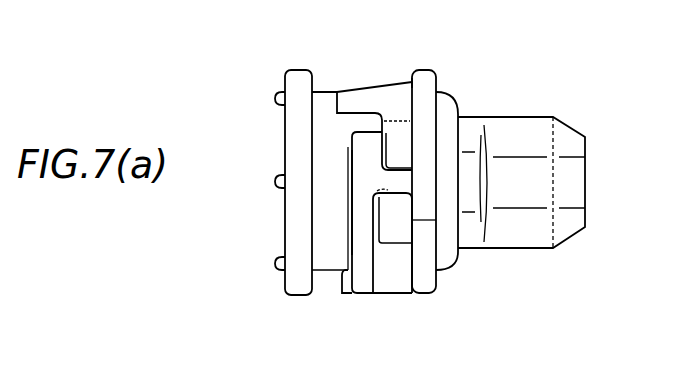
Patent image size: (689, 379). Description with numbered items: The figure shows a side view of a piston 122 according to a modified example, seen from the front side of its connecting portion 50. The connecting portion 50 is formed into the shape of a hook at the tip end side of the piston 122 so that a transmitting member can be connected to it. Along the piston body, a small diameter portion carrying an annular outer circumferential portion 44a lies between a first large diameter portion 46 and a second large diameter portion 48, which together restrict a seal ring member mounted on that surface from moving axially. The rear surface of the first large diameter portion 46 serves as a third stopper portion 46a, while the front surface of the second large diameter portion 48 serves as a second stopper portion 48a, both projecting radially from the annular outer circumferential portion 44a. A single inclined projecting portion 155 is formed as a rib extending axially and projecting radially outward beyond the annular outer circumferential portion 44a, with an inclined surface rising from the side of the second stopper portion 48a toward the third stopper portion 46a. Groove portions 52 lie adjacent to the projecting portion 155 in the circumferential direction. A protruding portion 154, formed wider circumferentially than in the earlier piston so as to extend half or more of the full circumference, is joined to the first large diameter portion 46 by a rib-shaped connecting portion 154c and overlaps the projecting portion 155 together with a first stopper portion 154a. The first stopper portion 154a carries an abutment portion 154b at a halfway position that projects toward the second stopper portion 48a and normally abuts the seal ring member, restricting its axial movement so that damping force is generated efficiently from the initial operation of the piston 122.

The piston 122 is at (466, 329).
The annular outer circumferential portion 44a is at (325, 92).
The inclined projecting portion 155 is at (366, 88).
The first large diameter portion 46 is at (422, 77).
The third stopper portion 46a is at (412, 83).
The groove portions 52 is at (400, 133).
The connecting portion 154c is at (397, 170).
The connecting portion 50 is at (543, 143).
The second large diameter portion 48 is at (297, 153).
The second stopper portion 48a is at (310, 115).
The protruding portion 154 is at (365, 164).
The first stopper portion 154a is at (350, 203).
The abutment portion 154b is at (340, 281).